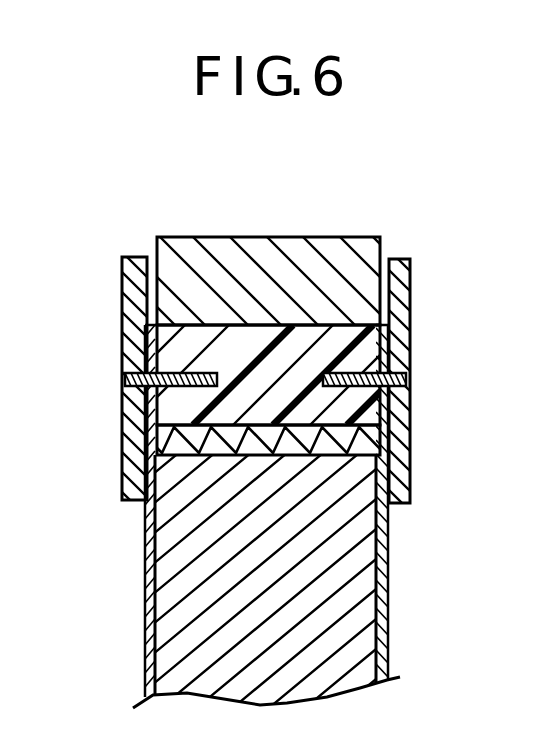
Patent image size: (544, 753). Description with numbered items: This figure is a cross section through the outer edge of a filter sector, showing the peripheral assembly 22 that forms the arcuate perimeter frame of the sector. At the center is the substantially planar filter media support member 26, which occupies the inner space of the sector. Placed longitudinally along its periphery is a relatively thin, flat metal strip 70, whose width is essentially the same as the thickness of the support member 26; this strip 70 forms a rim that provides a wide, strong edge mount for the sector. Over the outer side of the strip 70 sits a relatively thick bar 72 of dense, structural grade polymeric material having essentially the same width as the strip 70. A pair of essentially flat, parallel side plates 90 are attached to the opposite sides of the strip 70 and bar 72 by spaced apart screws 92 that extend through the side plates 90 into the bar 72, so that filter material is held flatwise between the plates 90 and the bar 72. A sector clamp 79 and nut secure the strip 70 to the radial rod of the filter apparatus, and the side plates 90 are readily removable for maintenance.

The peripheral assembly 22 is at (100, 306).
The filter media support member 26 is at (302, 603).
The flat strip 70 is at (290, 450).
The bar 72 is at (290, 355).
The sector clamp 79 is at (258, 258).
The flat side plates 90 is at (122, 340).
The screws 92 is at (123, 383).